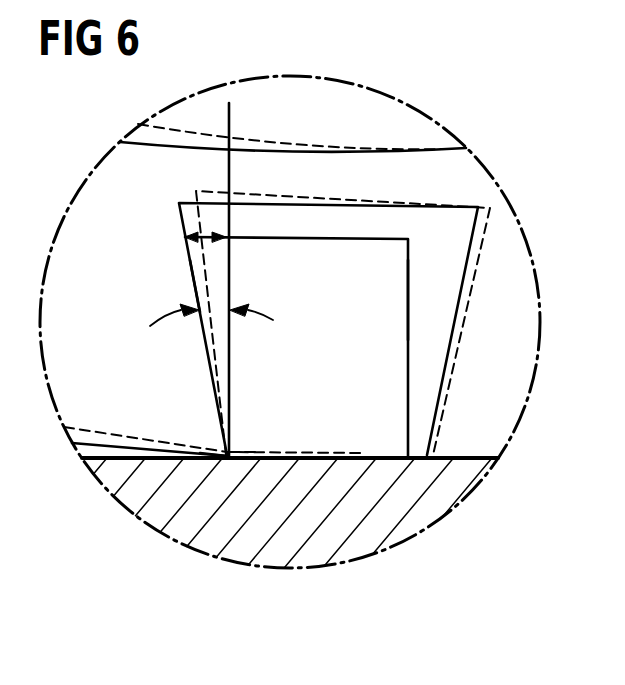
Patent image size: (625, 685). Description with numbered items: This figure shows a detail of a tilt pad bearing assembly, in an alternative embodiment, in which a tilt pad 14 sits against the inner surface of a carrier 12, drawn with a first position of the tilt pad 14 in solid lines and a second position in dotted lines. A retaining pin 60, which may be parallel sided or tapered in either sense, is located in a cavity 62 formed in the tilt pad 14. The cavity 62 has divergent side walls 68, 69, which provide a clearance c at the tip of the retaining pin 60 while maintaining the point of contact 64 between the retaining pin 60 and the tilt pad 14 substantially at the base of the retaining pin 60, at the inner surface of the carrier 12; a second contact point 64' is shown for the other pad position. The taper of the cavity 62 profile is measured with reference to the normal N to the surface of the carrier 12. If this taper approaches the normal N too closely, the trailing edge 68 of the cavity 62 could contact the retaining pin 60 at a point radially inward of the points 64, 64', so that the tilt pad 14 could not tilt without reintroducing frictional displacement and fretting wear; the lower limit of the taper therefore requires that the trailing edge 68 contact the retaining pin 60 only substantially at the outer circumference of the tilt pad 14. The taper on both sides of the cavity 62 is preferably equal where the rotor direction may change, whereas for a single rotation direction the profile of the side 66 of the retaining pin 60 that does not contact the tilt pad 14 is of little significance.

The carrier 12 is at (332, 560).
The tilt pad 14 is at (523, 327).
The retaining pin 60 is at (345, 347).
The cavity 62 is at (428, 237).
The point of contact 64 is at (192, 422).
The point of contact 64' is at (273, 428).
The side of the retaining pin 66 is at (411, 302).
The trailing edge 68 is at (195, 285).
The side wall 69 is at (454, 370).
The normal N is at (230, 124).
The clearance c is at (214, 241).